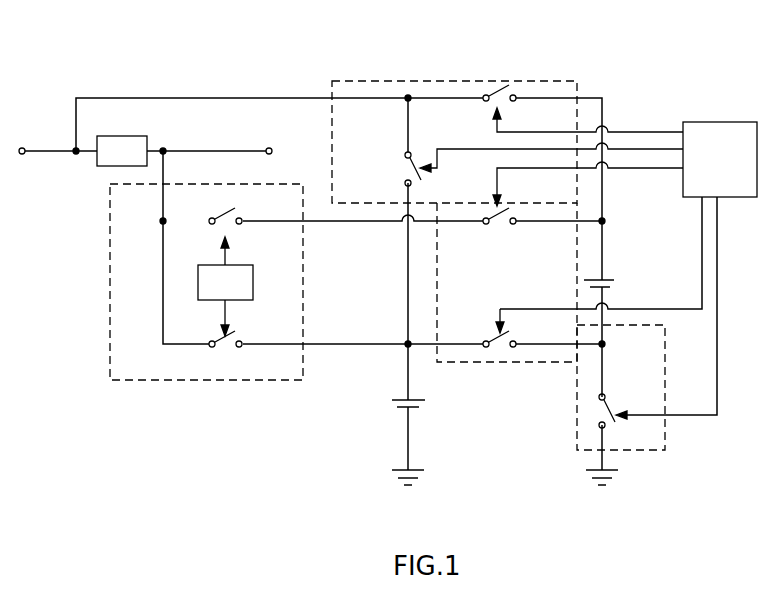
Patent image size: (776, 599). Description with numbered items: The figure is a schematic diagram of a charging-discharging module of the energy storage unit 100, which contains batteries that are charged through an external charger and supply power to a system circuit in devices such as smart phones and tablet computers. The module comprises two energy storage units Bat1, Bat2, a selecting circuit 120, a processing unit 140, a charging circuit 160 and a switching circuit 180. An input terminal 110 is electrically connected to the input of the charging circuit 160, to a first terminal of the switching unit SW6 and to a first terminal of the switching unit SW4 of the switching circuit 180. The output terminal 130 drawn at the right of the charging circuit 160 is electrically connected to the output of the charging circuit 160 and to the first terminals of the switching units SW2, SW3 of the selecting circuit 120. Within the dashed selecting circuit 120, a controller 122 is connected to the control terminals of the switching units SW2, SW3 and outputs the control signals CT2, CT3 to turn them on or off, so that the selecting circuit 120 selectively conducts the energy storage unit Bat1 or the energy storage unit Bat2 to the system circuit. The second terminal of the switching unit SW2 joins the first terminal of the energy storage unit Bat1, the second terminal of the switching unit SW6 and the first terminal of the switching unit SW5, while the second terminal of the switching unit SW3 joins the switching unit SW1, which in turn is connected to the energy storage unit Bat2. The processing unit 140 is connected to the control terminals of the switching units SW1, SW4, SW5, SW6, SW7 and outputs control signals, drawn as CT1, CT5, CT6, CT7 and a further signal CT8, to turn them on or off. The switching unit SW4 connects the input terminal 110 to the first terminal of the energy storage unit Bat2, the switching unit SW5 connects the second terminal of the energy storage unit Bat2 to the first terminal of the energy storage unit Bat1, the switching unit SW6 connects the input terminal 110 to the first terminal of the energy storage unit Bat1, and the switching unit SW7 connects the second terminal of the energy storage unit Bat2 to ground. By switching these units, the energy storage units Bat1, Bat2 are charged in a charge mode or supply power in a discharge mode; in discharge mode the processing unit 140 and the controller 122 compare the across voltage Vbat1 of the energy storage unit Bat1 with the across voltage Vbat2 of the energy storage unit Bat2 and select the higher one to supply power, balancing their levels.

The charging-discharging module of the energy storage unit 100 is at (388, 251).
The input terminal 110 is at (24, 156).
The selecting circuit 120 is at (172, 381).
The controller 122 is at (225, 282).
The output terminal 130 is at (267, 147).
The processing unit 140 is at (720, 159).
The charging circuit 160 is at (122, 151).
The switching circuit 180 is at (393, 79).
The switching unit SW1 is at (508, 208).
The switching unit SW2 is at (212, 338).
The switching unit SW3 is at (228, 208).
The switching unit SW4 is at (496, 90).
The switching unit SW5 is at (490, 335).
The switching unit SW6 is at (403, 164).
The switching unit SW7 is at (612, 394).
The control signal CT1 is at (241, 251).
The control signal CT2 is at (241, 318).
The control signal CT3 is at (573, 184).
The control signal CT5 is at (517, 313).
The control signal CT6 is at (551, 152).
The control signal CT7 is at (634, 409).
The eighth control signal CT8 is at (588, 120).
The energy storage unit Bat1 is at (403, 398).
The energy storage unit Bat2 is at (612, 278).
The across voltage of the energy storage unit Bat1 Vbat1 is at (446, 409).
The across voltage of the energy storage unit Bat2 Vbat2 is at (640, 286).